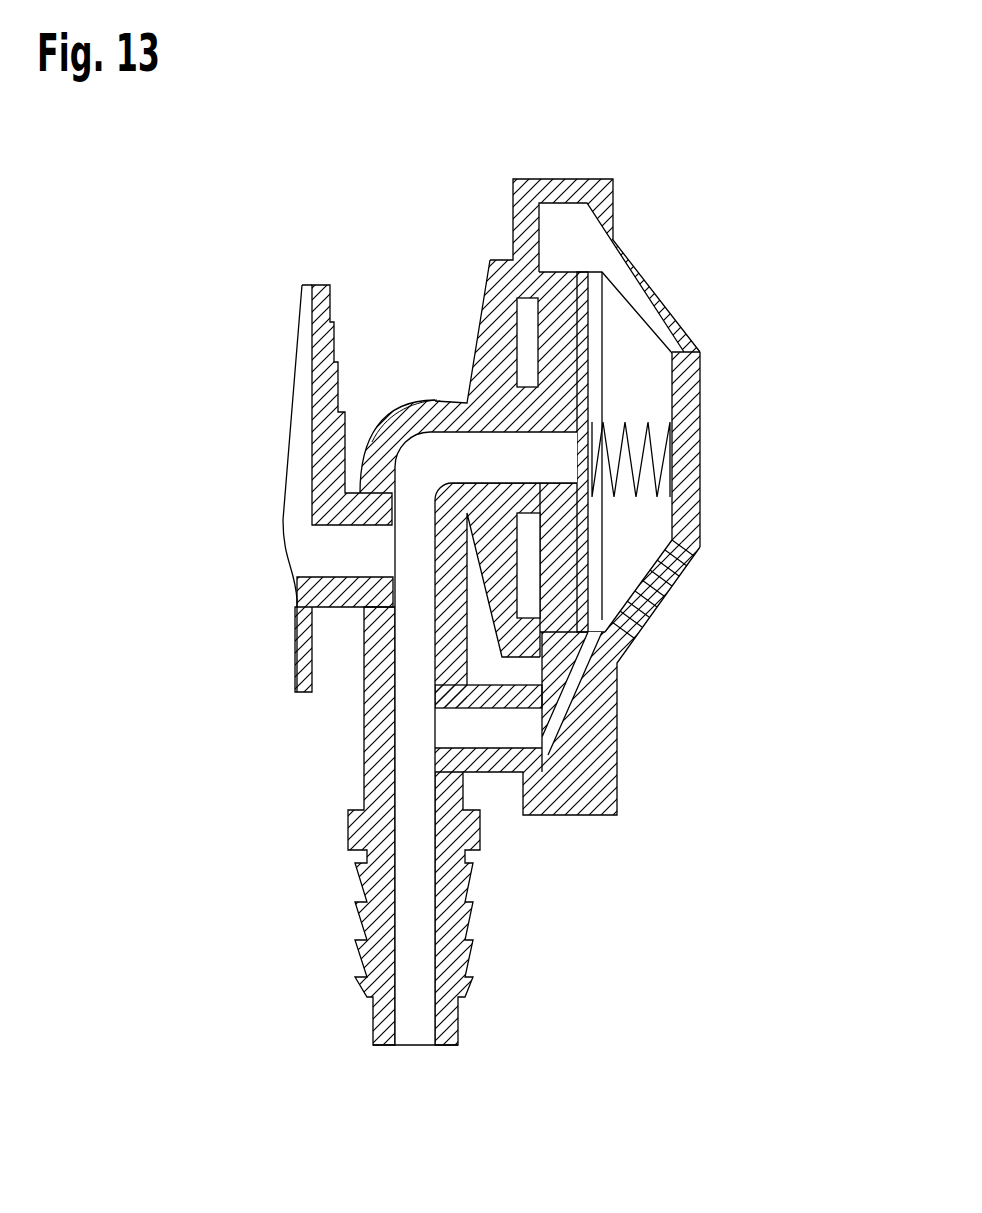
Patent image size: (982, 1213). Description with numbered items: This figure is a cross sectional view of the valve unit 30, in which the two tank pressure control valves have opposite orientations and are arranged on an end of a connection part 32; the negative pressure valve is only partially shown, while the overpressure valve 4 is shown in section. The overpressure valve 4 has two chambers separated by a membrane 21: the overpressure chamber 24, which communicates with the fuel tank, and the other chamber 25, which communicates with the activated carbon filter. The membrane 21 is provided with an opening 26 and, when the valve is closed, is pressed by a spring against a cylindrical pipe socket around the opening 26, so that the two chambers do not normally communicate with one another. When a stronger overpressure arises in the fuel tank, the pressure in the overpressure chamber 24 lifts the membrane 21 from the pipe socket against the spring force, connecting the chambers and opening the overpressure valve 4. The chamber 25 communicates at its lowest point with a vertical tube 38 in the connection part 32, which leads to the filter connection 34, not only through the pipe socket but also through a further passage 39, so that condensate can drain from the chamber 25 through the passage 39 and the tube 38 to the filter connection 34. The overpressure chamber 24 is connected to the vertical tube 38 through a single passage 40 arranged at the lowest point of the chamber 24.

The valve unit 30 is at (378, 213).
The overpressure chamber 24 is at (530, 341).
The overpressure valve 4 is at (675, 305).
The other chamber 25 is at (637, 378).
The opening 26 is at (582, 457).
The membrane 21 is at (582, 550).
The passage 40 is at (342, 560).
The connection part 32 is at (350, 783).
The vertical tube 38 is at (407, 902).
The further passage 39 is at (497, 757).
The filter connection 34 is at (465, 983).